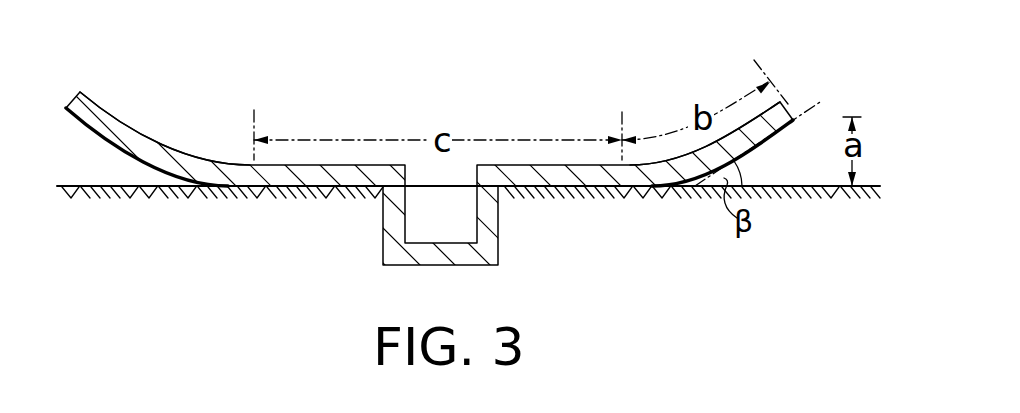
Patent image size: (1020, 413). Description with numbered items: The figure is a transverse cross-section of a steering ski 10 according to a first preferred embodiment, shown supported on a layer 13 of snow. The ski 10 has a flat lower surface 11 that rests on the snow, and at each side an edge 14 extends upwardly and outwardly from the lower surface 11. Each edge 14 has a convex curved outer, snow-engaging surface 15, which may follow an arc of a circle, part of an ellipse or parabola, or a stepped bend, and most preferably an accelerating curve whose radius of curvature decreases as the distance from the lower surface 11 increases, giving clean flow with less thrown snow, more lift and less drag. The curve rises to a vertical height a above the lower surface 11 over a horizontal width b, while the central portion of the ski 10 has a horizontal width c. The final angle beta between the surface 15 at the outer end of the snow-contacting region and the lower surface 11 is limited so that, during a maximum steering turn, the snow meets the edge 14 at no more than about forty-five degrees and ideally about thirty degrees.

The ski 10 is at (472, 156).
The lower surface 11 is at (266, 187).
The layer of snow 13 is at (220, 270).
The edge 14 is at (143, 139).
The convex curved outer surface 15 is at (114, 143).